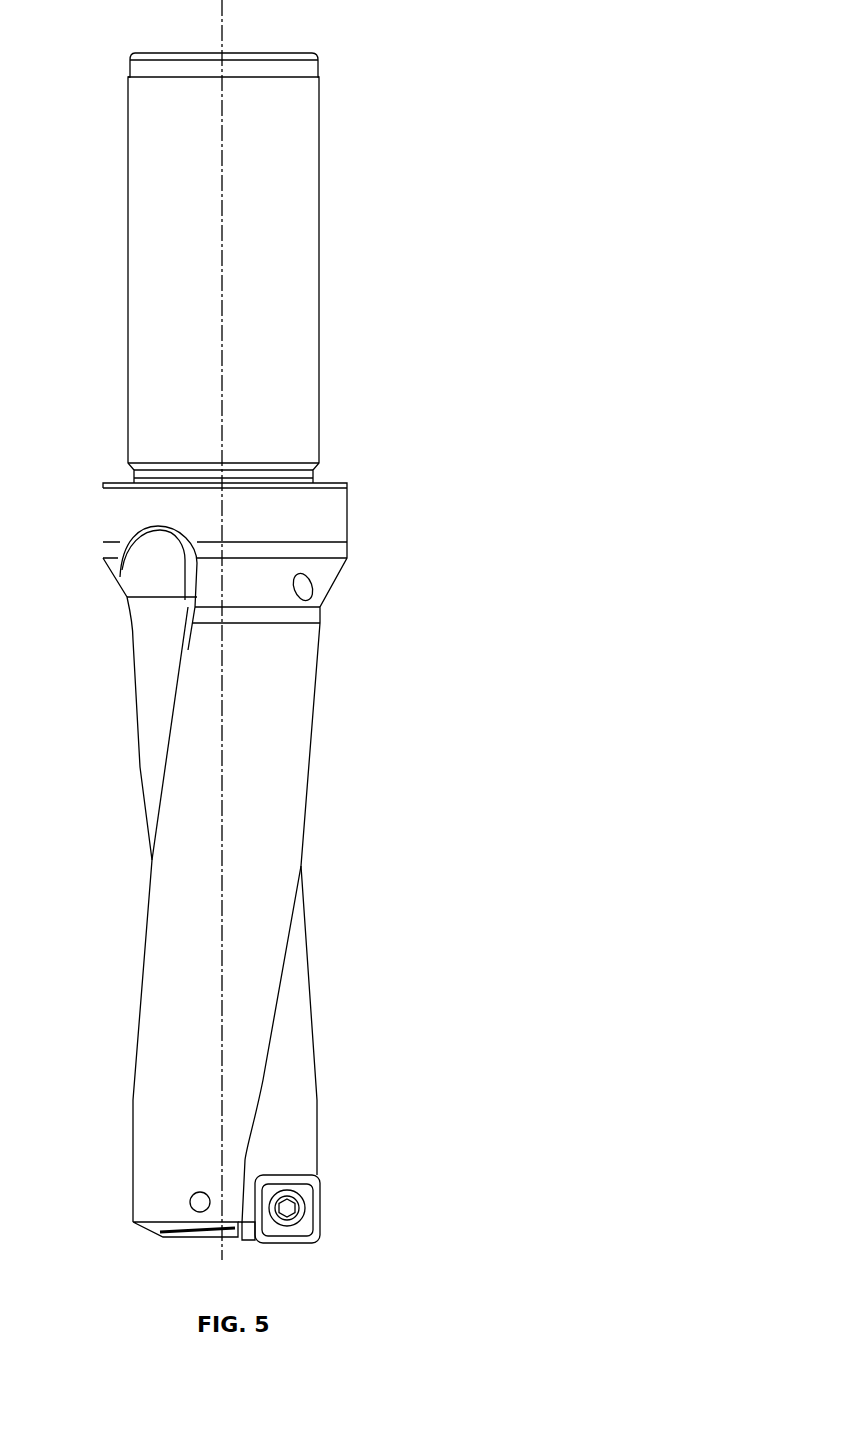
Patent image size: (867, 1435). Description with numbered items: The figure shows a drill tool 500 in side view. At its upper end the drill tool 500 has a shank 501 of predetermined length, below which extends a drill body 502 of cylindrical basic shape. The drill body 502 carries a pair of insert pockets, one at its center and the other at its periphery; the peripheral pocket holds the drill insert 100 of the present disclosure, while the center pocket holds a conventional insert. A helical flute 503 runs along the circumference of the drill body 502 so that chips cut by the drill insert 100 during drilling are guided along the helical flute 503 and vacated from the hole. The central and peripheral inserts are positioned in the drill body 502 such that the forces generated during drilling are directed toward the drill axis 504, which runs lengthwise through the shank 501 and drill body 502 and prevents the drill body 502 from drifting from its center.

The drill tool 500 is at (324, 630).
The shank 501 is at (300, 307).
The drill body 502 is at (297, 647).
The helical flute 503 is at (153, 770).
The drill axis 504 is at (223, 938).
The drill insert 100 is at (310, 1208).